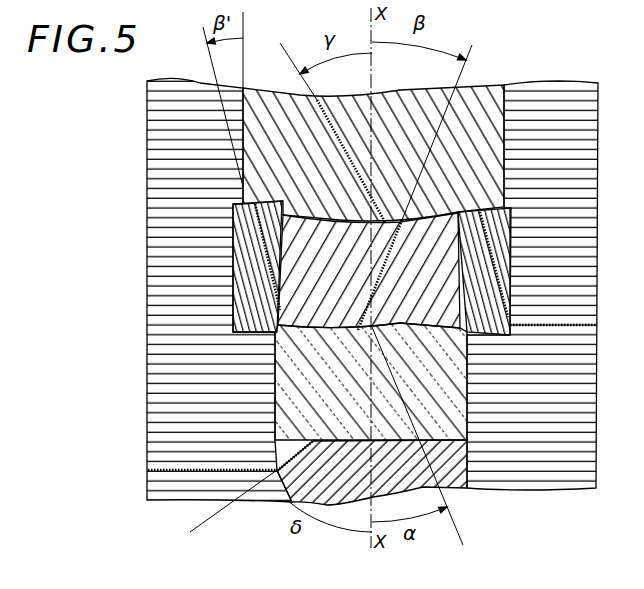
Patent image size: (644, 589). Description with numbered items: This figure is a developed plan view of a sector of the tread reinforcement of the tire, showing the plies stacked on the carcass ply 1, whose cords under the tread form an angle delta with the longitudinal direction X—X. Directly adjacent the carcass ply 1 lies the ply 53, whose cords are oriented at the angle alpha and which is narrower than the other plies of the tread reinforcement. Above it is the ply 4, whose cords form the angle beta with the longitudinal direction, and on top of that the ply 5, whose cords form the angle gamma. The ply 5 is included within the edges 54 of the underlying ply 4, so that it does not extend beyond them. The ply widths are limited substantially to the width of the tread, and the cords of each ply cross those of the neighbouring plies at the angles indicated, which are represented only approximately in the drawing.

The carcass ply 1 is at (214, 404).
The tread ply 4 is at (333, 276).
The tread ply 5 is at (308, 166).
The ply 53 is at (332, 392).
The edges 54 is at (272, 307).